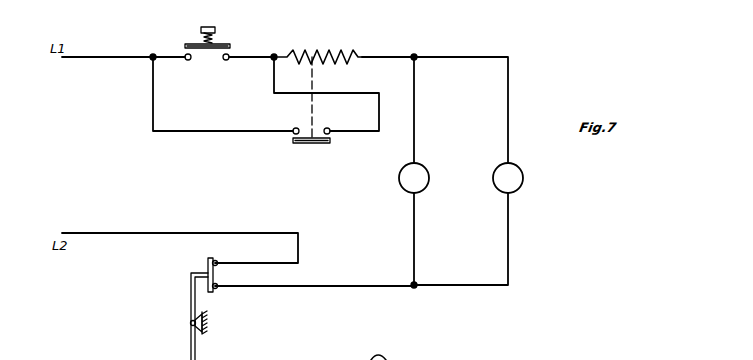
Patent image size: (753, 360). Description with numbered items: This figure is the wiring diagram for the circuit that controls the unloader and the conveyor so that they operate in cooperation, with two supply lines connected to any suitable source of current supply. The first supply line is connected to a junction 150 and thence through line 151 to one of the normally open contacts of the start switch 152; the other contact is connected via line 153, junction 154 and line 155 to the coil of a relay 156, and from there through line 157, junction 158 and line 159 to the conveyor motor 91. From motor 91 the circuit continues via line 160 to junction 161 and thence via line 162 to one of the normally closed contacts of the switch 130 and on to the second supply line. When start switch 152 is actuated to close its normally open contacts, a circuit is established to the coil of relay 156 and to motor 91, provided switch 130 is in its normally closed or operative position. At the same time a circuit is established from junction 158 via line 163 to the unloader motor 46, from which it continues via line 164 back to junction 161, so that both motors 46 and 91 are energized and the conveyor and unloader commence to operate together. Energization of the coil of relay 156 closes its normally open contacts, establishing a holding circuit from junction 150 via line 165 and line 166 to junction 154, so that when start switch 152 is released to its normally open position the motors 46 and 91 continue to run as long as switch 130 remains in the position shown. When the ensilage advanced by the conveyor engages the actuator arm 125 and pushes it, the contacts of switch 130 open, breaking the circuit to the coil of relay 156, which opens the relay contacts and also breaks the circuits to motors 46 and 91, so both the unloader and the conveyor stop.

The junction 150 is at (153, 55).
The line 151 is at (168, 59).
The start switch 152 is at (219, 35).
The line 153 is at (249, 59).
The junction 154 is at (275, 55).
The line 155 is at (288, 56).
The relay 156 is at (324, 151).
The line 157 is at (384, 59).
The junction 158 is at (415, 56).
The line 159 is at (508, 89).
The line 160 is at (511, 243).
The junction 161 is at (416, 288).
The line 162 is at (352, 283).
The line 163 is at (418, 98).
The line 164 is at (418, 224).
The line 165 is at (217, 132).
The line 166 is at (386, 108).
The motor 46 is at (425, 174).
The motor 91 is at (524, 176).
The switch 130 is at (207, 261).
The actuator arm 125 is at (190, 346).